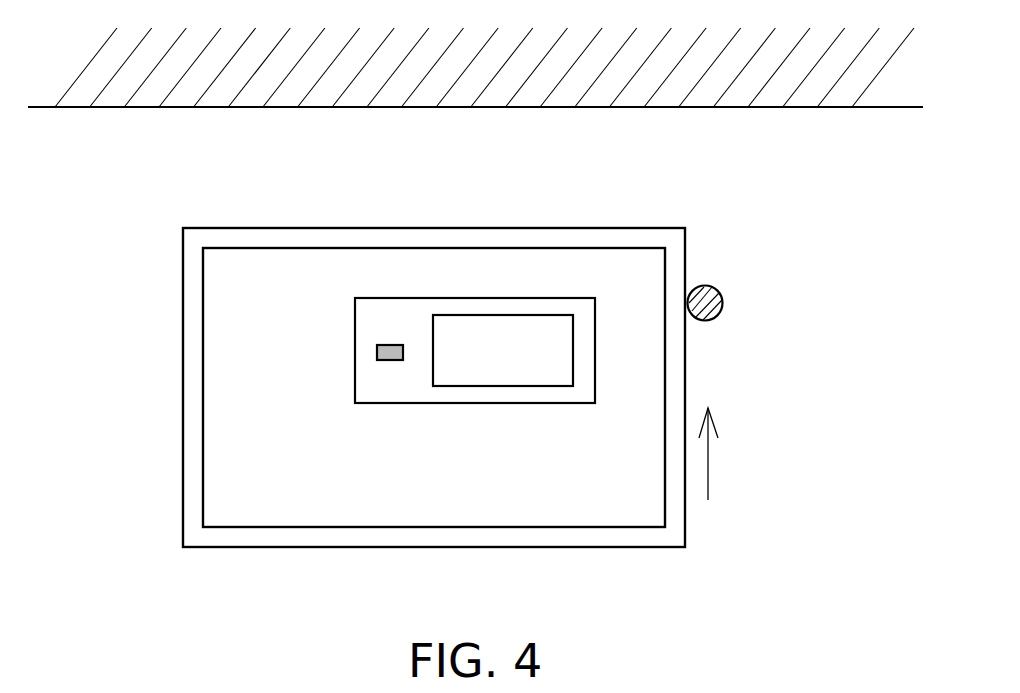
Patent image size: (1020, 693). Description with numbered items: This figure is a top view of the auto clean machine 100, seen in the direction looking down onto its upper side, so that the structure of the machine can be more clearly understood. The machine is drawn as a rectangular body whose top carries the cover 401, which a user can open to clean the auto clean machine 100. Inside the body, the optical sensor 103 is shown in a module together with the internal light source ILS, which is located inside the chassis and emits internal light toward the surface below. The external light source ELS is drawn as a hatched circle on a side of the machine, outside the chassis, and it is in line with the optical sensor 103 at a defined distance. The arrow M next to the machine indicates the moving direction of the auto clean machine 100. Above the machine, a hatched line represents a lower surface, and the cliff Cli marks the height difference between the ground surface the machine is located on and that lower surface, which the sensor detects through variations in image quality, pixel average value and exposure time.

The auto clean machine 100 is at (434, 228).
The cover 401 is at (435, 527).
The optical sensor 103 is at (506, 386).
The internal light source ILS is at (377, 353).
The external light source ELS is at (700, 321).
The cliff Cli is at (822, 107).
The arrow M is at (720, 454).